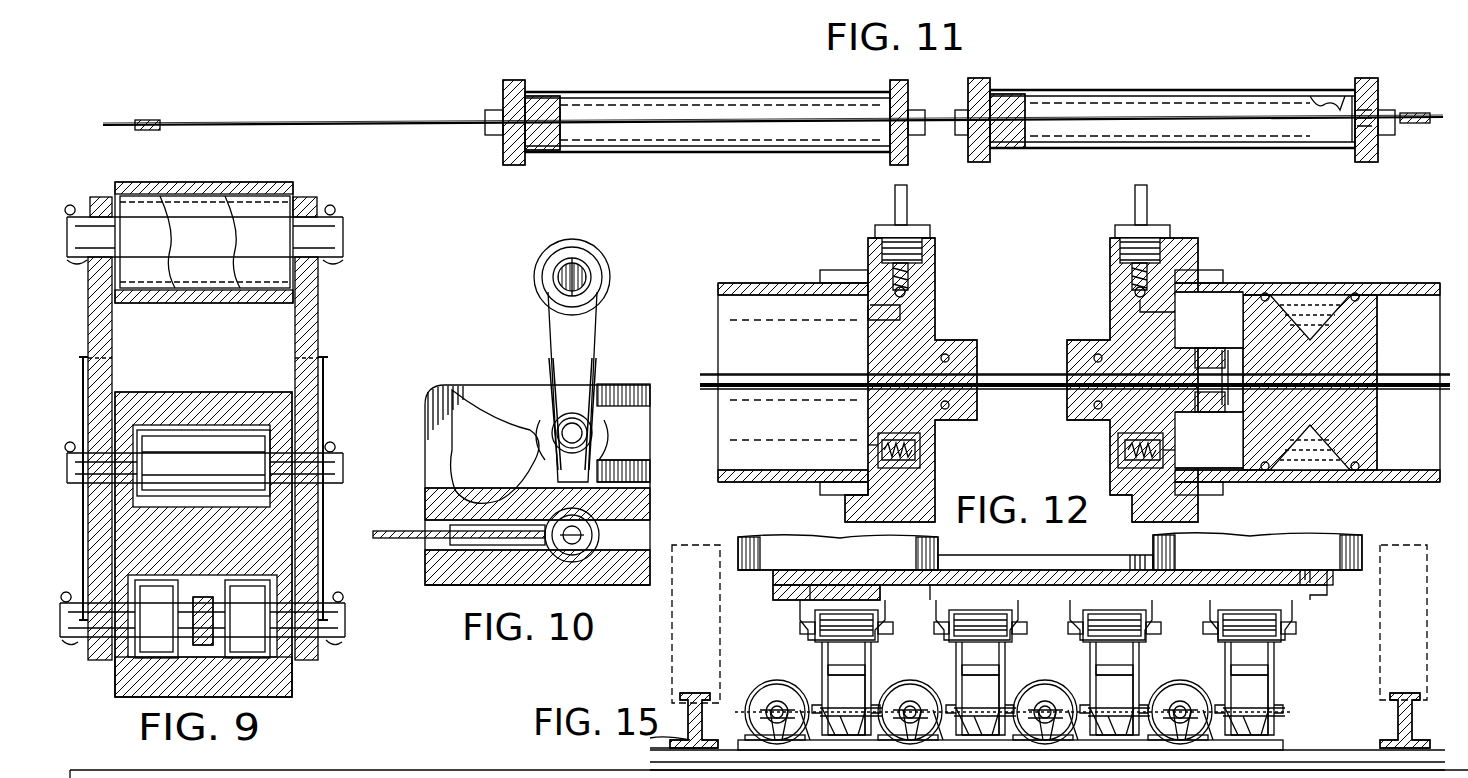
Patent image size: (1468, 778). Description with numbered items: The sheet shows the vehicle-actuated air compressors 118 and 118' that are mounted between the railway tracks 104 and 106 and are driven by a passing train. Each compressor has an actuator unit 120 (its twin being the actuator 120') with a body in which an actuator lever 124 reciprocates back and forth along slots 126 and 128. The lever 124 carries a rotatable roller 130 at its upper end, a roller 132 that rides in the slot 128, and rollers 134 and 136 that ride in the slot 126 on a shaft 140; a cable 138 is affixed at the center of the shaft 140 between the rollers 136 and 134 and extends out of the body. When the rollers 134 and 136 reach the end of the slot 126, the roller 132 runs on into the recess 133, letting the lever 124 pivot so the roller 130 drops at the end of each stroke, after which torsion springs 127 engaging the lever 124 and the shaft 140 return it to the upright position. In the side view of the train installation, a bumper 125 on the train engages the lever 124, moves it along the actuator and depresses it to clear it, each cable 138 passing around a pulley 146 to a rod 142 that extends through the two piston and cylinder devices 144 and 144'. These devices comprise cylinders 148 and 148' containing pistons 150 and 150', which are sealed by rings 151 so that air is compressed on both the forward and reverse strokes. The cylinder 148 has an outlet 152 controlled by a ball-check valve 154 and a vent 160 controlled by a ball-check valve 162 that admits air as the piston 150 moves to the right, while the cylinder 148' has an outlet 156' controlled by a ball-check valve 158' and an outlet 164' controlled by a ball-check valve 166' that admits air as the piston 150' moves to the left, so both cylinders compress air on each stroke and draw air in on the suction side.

In FIG. 15, the track 104 is at (1398, 714).
In FIG. 15, the track 106 is at (665, 745).
In FIG. 11, the vehicle-actuated air compressor 118 is at (1175, 99).
In FIG. 11, the vehicle-actuated air compressor 118' is at (705, 100).
In FIG. 10, the actuator unit 120 is at (515, 484).
In FIG. 15, the actuator unit 120 is at (1045, 657).
In FIG. 15, the actuator unit 120' is at (769, 758).
In FIG. 9, the actuator lever 124 is at (112, 318).
In FIG. 10, the actuator lever 124 is at (590, 338).
In FIG. 15, the actuator lever 124 is at (820, 650).
In FIG. 15, the bumper 125 is at (802, 620).
In FIG. 9, the slot 126 is at (200, 670).
In FIG. 10, the slot 126 is at (640, 516).
In FIG. 9, the torsion spring 127 is at (83, 380).
In FIG. 10, the torsion spring 127 is at (548, 367).
In FIG. 9, the slot 128 is at (200, 400).
In FIG. 10, the slot 128 is at (636, 420).
In FIG. 9, the rotatable roller 130 is at (238, 184).
In FIG. 10, the rotatable roller 130 is at (552, 258).
In FIG. 9, the roller 132 is at (225, 472).
In FIG. 10, the roller 132 is at (595, 436).
In FIG. 10, the recess 133 is at (462, 470).
In FIG. 9, the roller 134 is at (262, 626).
In FIG. 10, the roller 134 is at (590, 526).
In FIG. 9, the roller 136 is at (175, 626).
In FIG. 9, the cable 138 is at (198, 597).
In FIG. 10, the cable 138 is at (410, 531).
In FIG. 9, the shaft 140 is at (345, 613).
In FIG. 11, the rod 142 is at (320, 123).
In FIG. 12, the rod 142 is at (1008, 372).
In FIG. 11, the piston and cylinder device 144 is at (1172, 136).
In FIG. 15, the piston and cylinder device 144 is at (966, 696).
In FIG. 11, the piston and cylinder device 144' is at (707, 138).
In FIG. 15, the pulley 146 is at (770, 713).
In FIG. 11, the cylinder 148 is at (1172, 136).
In FIG. 12, the cylinder 148 is at (1307, 367).
In FIG. 11, the cylinder 148' is at (707, 138).
In FIG. 12, the cylinder 148' is at (793, 367).
In FIG. 11, the piston 150 is at (1203, 120).
In FIG. 12, the piston 150 is at (1301, 381).
In FIG. 11, the piston 150' is at (594, 129).
In FIG. 12, the ring 151 is at (1355, 470).
In FIG. 12, the outlet 152 is at (1150, 312).
In FIG. 12, the ball-check valve 154 is at (1130, 295).
In FIG. 12, the outlet 156' is at (852, 327).
In FIG. 12, the ball-check valve 158' is at (934, 241).
In FIG. 12, the vent 160 is at (1165, 448).
In FIG. 12, the ball-check valve 162 is at (1118, 447).
In FIG. 12, the outlet 164' is at (839, 445).
In FIG. 12, the ball-check valve 166' is at (936, 450).